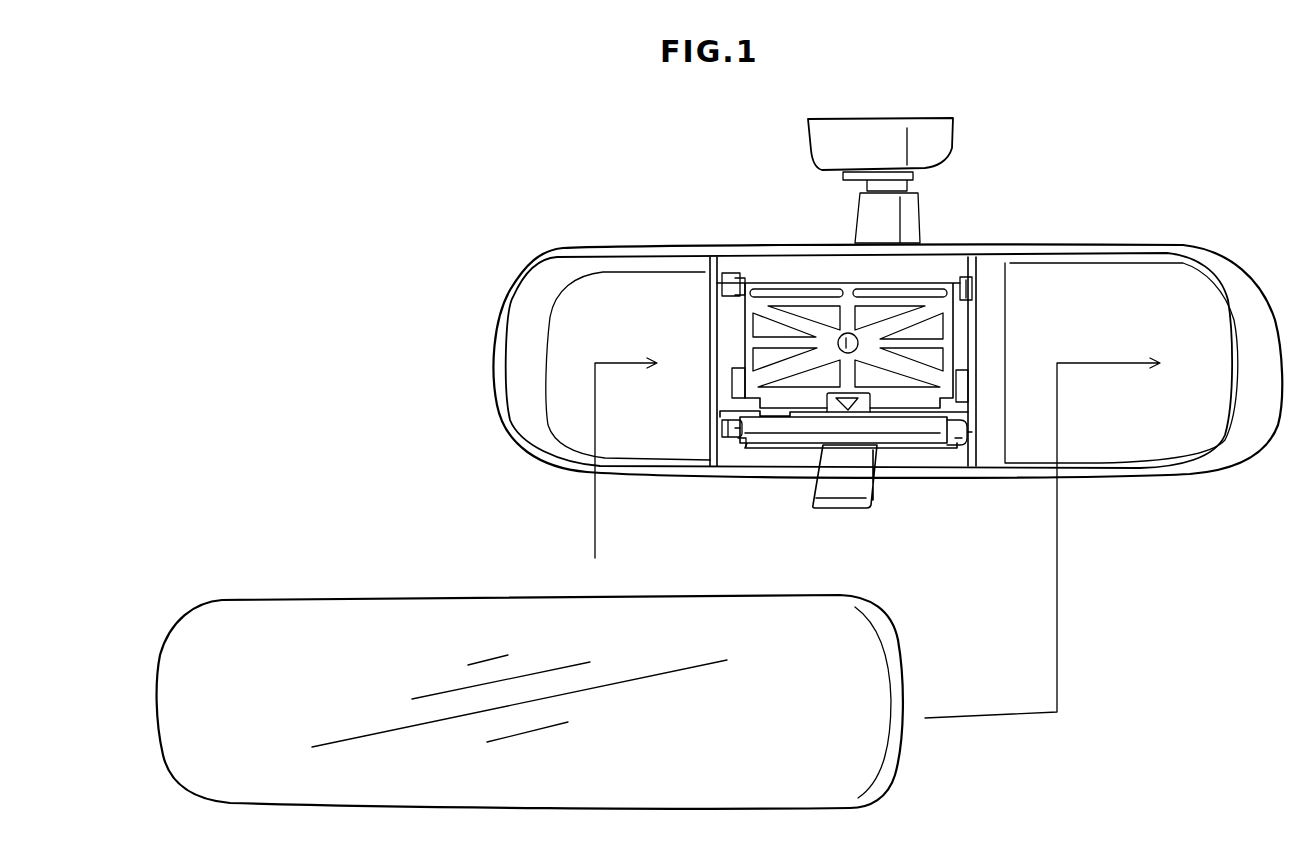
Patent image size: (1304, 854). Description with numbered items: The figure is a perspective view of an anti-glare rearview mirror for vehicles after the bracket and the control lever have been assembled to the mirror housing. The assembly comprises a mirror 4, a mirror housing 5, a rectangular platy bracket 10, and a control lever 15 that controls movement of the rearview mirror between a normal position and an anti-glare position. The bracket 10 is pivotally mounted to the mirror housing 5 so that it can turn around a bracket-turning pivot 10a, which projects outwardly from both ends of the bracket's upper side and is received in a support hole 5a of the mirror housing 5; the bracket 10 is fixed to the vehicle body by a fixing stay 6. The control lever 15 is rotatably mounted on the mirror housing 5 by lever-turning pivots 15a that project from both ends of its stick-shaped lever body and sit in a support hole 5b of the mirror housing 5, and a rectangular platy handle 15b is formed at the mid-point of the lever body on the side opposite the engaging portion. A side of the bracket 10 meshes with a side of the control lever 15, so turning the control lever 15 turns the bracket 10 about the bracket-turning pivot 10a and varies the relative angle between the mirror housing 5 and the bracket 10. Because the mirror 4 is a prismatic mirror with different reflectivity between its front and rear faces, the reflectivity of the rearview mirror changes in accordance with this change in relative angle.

The mirror 4 is at (408, 621).
The mirror housing 5 is at (1236, 275).
The support hole 5a is at (728, 274).
The support hole 5b is at (737, 441).
The fixing stay 6 is at (875, 220).
The bracket 10 is at (810, 280).
The bracket-turning pivot 10a is at (714, 300).
The control lever 15 is at (903, 452).
The lever-turning pivot 15a is at (724, 430).
The handle 15b is at (836, 495).